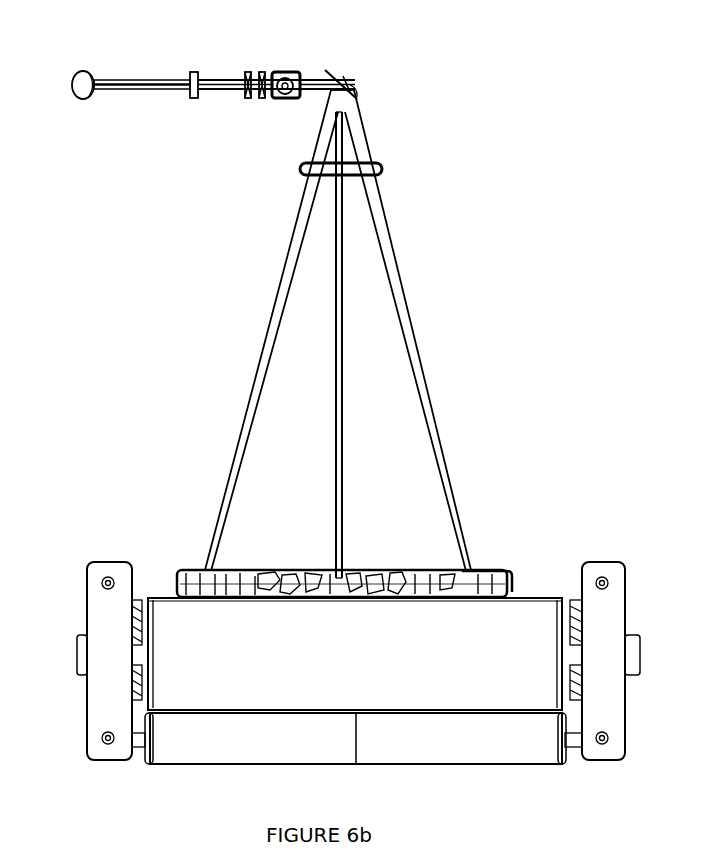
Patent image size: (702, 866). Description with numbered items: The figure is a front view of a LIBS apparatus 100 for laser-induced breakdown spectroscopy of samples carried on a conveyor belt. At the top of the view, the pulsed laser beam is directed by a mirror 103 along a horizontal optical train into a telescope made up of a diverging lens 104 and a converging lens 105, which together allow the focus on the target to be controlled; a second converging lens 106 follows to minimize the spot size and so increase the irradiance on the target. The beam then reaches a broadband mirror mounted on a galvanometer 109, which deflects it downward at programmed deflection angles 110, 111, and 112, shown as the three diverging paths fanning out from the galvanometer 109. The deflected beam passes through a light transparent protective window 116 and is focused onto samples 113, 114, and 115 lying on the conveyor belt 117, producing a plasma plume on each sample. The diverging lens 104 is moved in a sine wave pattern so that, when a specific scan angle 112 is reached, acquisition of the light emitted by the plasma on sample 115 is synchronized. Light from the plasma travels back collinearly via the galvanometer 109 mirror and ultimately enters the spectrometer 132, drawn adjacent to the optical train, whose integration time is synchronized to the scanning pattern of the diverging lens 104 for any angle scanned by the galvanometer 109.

The LIBS apparatus 100 is at (556, 161).
The mirror 103 is at (79, 92).
The diverging lens 104 is at (194, 99).
The converging lens 105 is at (248, 98).
The second converging lens 106 is at (263, 71).
The galvanometer 109 is at (338, 73).
The deflection angle 110 is at (281, 285).
The deflection angle 111 is at (343, 393).
The deflection angle 112 is at (396, 277).
The sample 113 is at (205, 571).
The sample 114 is at (318, 583).
The sample 115 is at (470, 571).
The light transparent protective window 116 is at (384, 165).
The conveyor belt 117 is at (507, 603).
The spectrometer 132 is at (293, 99).